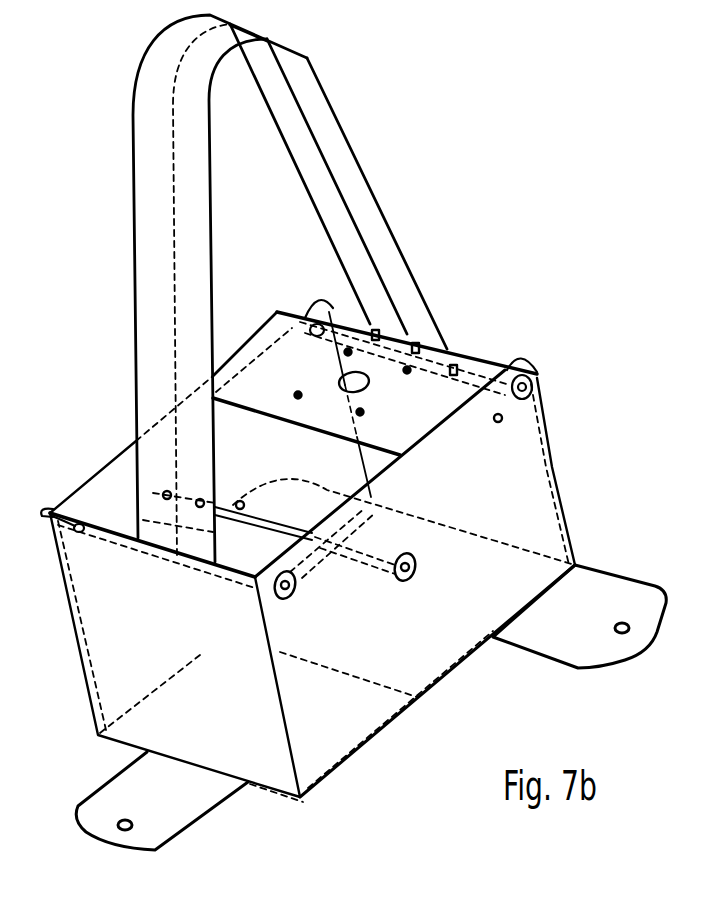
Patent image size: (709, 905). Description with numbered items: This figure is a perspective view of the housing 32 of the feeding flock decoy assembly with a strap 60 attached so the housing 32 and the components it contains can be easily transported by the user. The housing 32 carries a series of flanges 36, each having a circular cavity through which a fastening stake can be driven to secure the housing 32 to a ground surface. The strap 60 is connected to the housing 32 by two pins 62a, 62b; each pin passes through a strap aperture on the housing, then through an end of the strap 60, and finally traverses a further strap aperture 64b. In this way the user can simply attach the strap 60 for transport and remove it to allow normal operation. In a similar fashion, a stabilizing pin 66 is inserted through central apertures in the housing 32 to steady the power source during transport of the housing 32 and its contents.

The housing 32 is at (162, 633).
The flange 36 is at (612, 598).
The strap 60 is at (337, 152).
The pin 62a is at (45, 510).
The pin 62b is at (540, 392).
The strap aperture 64b is at (313, 318).
The stabilizing pin 66 is at (417, 578).